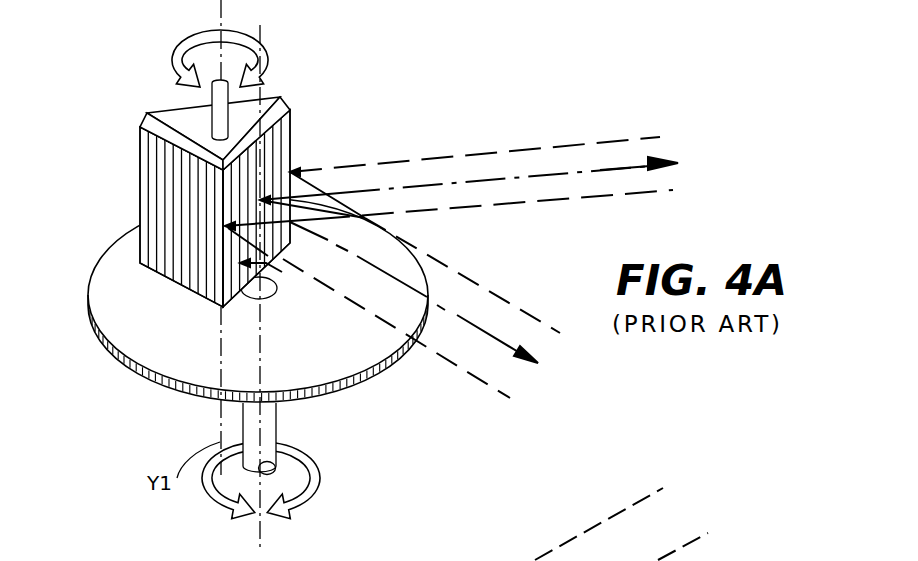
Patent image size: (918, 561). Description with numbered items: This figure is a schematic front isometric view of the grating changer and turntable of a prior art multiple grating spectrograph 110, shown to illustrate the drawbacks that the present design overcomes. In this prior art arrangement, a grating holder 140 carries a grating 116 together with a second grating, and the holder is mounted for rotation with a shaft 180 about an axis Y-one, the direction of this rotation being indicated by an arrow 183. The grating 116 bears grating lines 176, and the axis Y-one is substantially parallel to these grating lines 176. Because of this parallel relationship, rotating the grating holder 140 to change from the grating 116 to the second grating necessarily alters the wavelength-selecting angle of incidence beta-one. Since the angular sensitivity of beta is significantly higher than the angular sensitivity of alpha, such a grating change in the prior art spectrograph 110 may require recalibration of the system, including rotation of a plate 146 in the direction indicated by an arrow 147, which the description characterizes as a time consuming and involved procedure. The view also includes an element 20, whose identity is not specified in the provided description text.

The laser beam 20 is at (627, 170).
The prior art spectrograph 110 is at (222, 184).
The grating 116 is at (265, 299).
The grating holder 140 is at (237, 133).
The plate 146 is at (190, 347).
The arrow 147 is at (319, 461).
The grating lines 176 is at (192, 208).
The shaft 180 is at (223, 120).
The arrow 183 is at (207, 32).